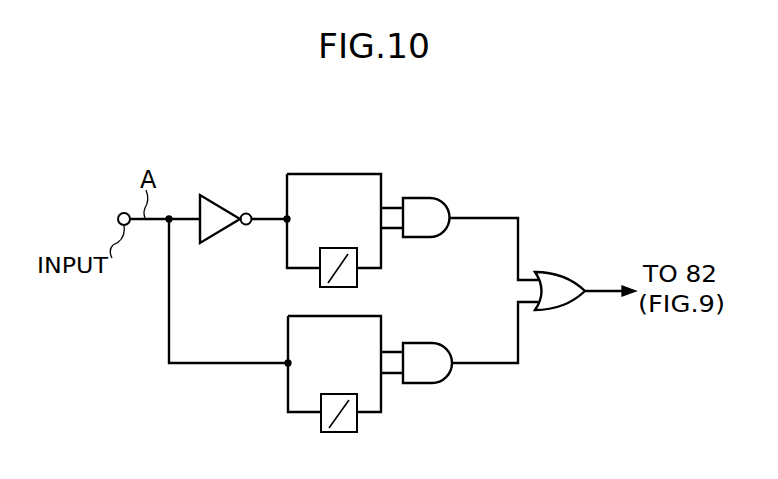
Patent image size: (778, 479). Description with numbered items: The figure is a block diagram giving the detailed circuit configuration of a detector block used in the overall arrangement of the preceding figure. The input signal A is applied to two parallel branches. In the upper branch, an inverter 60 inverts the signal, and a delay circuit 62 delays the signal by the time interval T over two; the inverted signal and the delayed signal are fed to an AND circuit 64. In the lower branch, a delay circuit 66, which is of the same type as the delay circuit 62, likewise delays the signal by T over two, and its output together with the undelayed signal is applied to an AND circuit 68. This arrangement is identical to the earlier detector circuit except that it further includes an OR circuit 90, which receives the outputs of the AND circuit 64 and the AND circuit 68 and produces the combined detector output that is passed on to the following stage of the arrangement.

The inverter 60 is at (218, 241).
The delay circuit 62 is at (357, 284).
The AND circuit 64 is at (430, 237).
The delay circuit 66 is at (337, 393).
The AND circuit 68 is at (428, 383).
The OR circuit 90 is at (556, 310).